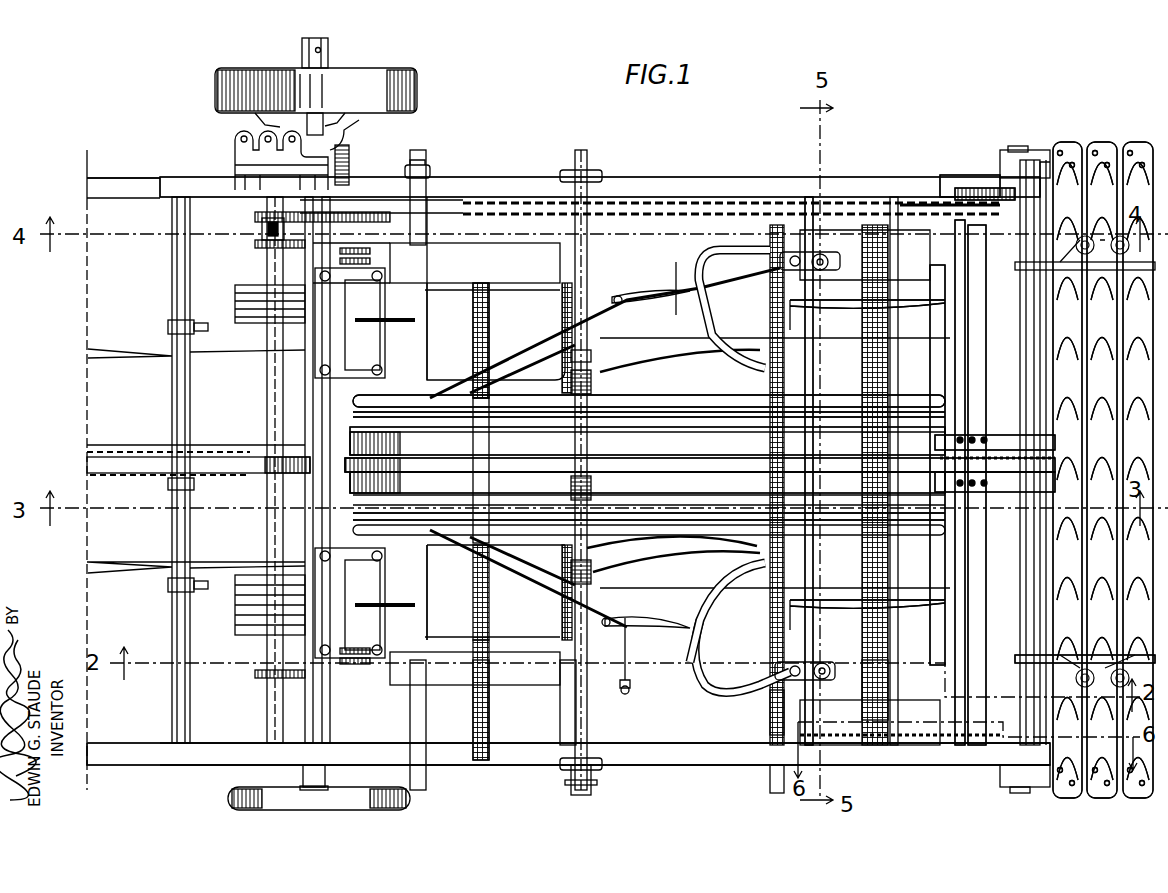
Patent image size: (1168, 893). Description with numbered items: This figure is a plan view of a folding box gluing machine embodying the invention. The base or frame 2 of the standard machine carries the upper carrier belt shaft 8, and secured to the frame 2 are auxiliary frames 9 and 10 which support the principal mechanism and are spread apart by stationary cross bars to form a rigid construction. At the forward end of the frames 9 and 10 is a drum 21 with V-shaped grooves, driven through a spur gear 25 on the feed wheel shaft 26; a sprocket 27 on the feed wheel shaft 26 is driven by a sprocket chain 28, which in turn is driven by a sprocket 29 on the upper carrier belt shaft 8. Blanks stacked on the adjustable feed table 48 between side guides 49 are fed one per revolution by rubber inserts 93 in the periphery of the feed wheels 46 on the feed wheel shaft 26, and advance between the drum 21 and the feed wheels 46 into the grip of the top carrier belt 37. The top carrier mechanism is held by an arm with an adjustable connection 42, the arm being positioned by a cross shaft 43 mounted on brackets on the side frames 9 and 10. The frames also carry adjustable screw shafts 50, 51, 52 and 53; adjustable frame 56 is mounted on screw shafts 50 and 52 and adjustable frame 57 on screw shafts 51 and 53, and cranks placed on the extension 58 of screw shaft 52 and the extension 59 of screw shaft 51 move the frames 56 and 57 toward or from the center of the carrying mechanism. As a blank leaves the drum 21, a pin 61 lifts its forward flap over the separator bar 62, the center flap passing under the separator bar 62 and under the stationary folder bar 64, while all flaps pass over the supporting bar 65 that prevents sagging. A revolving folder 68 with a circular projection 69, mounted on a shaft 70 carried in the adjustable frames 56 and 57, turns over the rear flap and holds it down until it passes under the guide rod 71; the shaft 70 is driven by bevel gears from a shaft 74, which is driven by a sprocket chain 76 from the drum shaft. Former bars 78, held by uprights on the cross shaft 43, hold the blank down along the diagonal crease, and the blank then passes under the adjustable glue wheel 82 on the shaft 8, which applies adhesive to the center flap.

The base or frame 2 is at (108, 180).
The upper carrier belt shaft 8 is at (268, 404).
The auxiliary frame 9 is at (682, 178).
The auxiliary frame 10 is at (650, 757).
The drum 21 is at (990, 300).
The spur gear 25 is at (962, 200).
The feed wheel shaft 26 is at (972, 366).
The sprocket 27 is at (985, 205).
The sprocket chain 28 is at (912, 203).
The sprocket 29 is at (262, 218).
The top carrier belt 37 is at (868, 460).
The adjustable connection 42 is at (1105, 468).
The shaft 43 is at (578, 440).
The feed wheels 46 is at (935, 470).
The adjustable feed table 48 is at (1100, 142).
The side guides 49 is at (1065, 660).
The adjustable screw shaft 50 is at (473, 717).
The adjustable screw shaft 51 is at (560, 724).
The adjustable screw shaft 52 is at (770, 724).
The adjustable screw shaft 53 is at (860, 712).
The adjustable frame 56 is at (655, 660).
The adjustable frame 57 is at (682, 298).
The extension 58 is at (770, 792).
The extension 59 is at (572, 786).
The pin 61 is at (926, 332).
The separator bar 62 is at (846, 312).
The stationary folder bar 64 is at (625, 310).
The supporting bar 65 is at (508, 338).
The revolving folder 68 is at (742, 200).
The circular projection 69 is at (748, 358).
The shaft 70 is at (826, 252).
The guide rod 71 is at (750, 418).
The shaft 74 is at (810, 578).
The sprocket chain 76 is at (920, 745).
The former bars 78 is at (708, 406).
The adjustable glue wheel 82 is at (245, 288).
The rubber inserts 93 is at (940, 442).